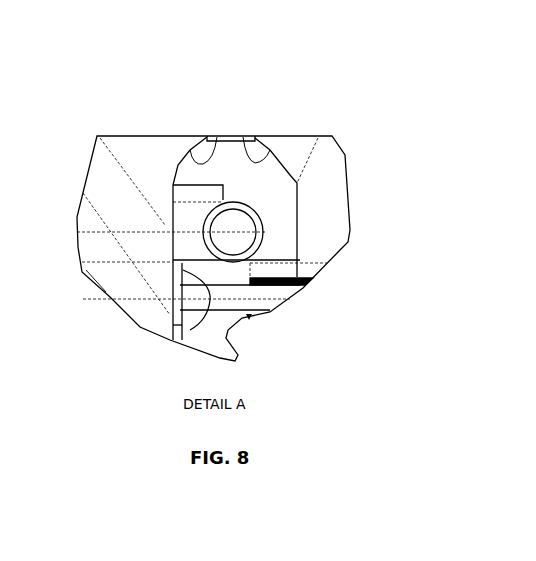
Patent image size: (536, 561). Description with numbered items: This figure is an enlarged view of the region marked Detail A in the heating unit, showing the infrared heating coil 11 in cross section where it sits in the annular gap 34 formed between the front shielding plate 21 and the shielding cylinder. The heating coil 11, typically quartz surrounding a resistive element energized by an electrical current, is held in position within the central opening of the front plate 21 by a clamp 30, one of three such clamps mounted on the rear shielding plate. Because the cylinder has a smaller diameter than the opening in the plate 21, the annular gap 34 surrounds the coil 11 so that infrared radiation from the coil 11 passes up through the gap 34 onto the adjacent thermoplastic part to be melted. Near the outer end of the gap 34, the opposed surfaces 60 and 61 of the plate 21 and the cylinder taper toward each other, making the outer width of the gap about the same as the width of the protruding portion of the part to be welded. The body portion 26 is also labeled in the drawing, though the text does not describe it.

The left body portion 26 is at (131, 136).
The front shielding plate 21 is at (292, 136).
The clamp 30 is at (186, 204).
The infrared heating coil 11 is at (263, 222).
The opposed tapering surface 61 is at (217, 136).
The annular gap 34 is at (228, 136).
The opposed tapering surface 60 is at (250, 136).